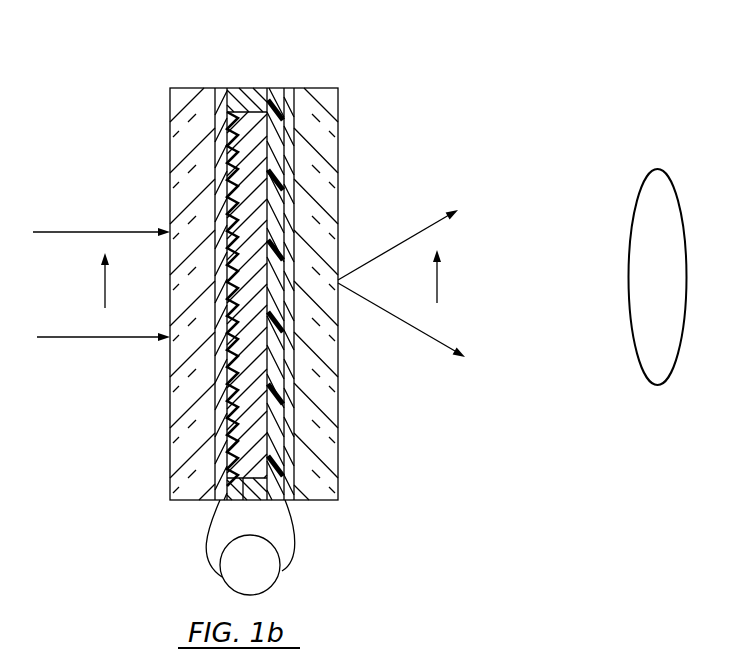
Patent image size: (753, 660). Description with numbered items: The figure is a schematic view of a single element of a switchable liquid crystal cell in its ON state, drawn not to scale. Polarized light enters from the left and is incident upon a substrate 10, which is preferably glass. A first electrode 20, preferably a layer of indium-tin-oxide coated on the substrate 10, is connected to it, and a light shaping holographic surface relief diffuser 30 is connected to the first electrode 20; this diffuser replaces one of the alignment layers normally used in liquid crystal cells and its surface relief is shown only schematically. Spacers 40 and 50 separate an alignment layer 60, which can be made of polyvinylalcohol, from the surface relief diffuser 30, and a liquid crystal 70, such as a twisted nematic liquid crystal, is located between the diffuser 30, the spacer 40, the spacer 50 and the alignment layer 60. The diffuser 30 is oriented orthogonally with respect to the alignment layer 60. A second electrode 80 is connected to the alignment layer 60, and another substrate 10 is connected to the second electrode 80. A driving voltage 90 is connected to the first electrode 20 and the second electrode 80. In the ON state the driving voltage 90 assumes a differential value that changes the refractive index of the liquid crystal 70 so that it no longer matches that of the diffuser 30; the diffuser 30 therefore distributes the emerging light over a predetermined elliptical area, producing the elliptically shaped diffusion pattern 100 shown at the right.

The substrate 10 is at (162, 121).
The first electrode 20 is at (221, 80).
The light shaping holographic surface relief diffuser 30 is at (216, 427).
The spacer 40 is at (243, 80).
The spacer 50 is at (226, 504).
The alignment layer 60 is at (277, 80).
The liquid crystal 70 is at (244, 500).
The second electrode 80 is at (296, 80).
The driving voltage 90 is at (212, 583).
The elliptically shaped diffusion pattern 100 is at (660, 160).